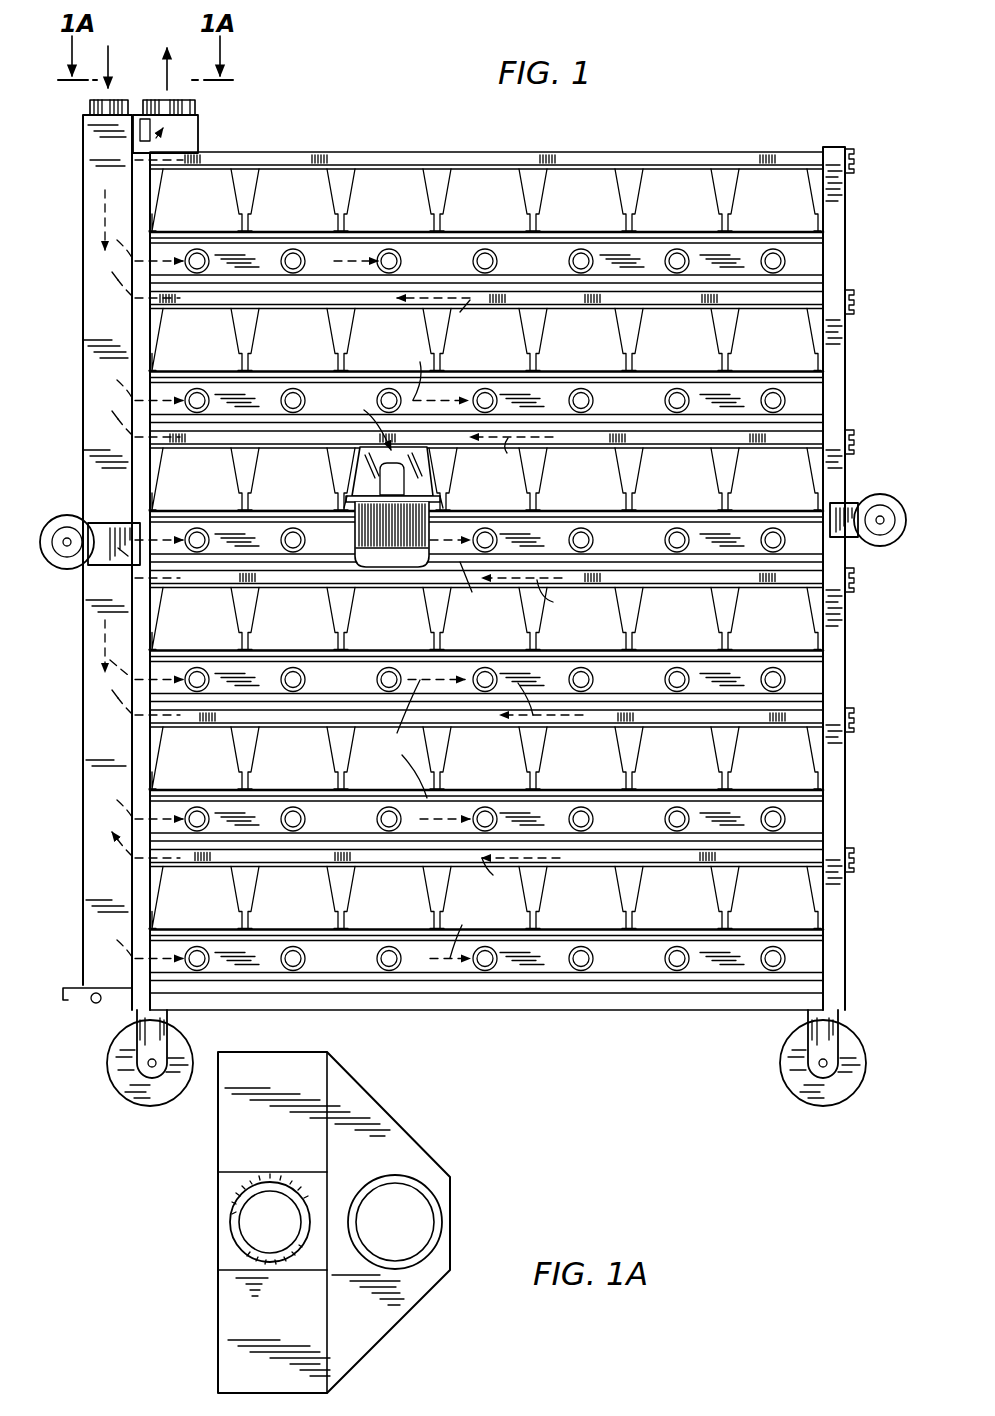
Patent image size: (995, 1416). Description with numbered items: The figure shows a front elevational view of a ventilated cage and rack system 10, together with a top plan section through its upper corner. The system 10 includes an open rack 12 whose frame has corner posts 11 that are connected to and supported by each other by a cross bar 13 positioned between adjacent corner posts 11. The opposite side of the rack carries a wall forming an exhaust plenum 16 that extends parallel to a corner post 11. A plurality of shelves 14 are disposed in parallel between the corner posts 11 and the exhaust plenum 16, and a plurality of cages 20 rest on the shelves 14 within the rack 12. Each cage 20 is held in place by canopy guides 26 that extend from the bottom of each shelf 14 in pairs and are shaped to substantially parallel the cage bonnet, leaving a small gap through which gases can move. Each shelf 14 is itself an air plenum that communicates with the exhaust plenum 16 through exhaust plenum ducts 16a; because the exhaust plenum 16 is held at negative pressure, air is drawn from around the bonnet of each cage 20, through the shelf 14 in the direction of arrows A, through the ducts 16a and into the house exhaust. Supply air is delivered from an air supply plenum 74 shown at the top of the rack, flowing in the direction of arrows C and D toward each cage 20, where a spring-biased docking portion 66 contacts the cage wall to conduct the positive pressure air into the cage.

In FIG. 1, the ventilated cage and rack system 10 is at (866, 112).
In FIG. 1, the corner post 11 is at (845, 630).
In FIG. 1, the open rack 12 is at (847, 366).
In FIG. 1, the cross bar 13 is at (850, 170).
In FIG. 1, the shelf 14 is at (582, 310).
In FIG. 1, the exhaust plenum 16 is at (198, 131).
In FIG. 1A, the exhaust plenum 16 is at (412, 1152).
In FIG. 1A, the exhaust plenum duct 16a is at (218, 1147).
In FIG. 1, the cage 20 is at (350, 542).
In FIG. 1, the canopy guide 26 is at (357, 463).
In FIG. 1, the docking portion 66 is at (282, 266).
In FIG. 1, the air supply plenum 74 is at (129, 113).
In FIG. 1A, the air supply plenum 74 is at (218, 1250).